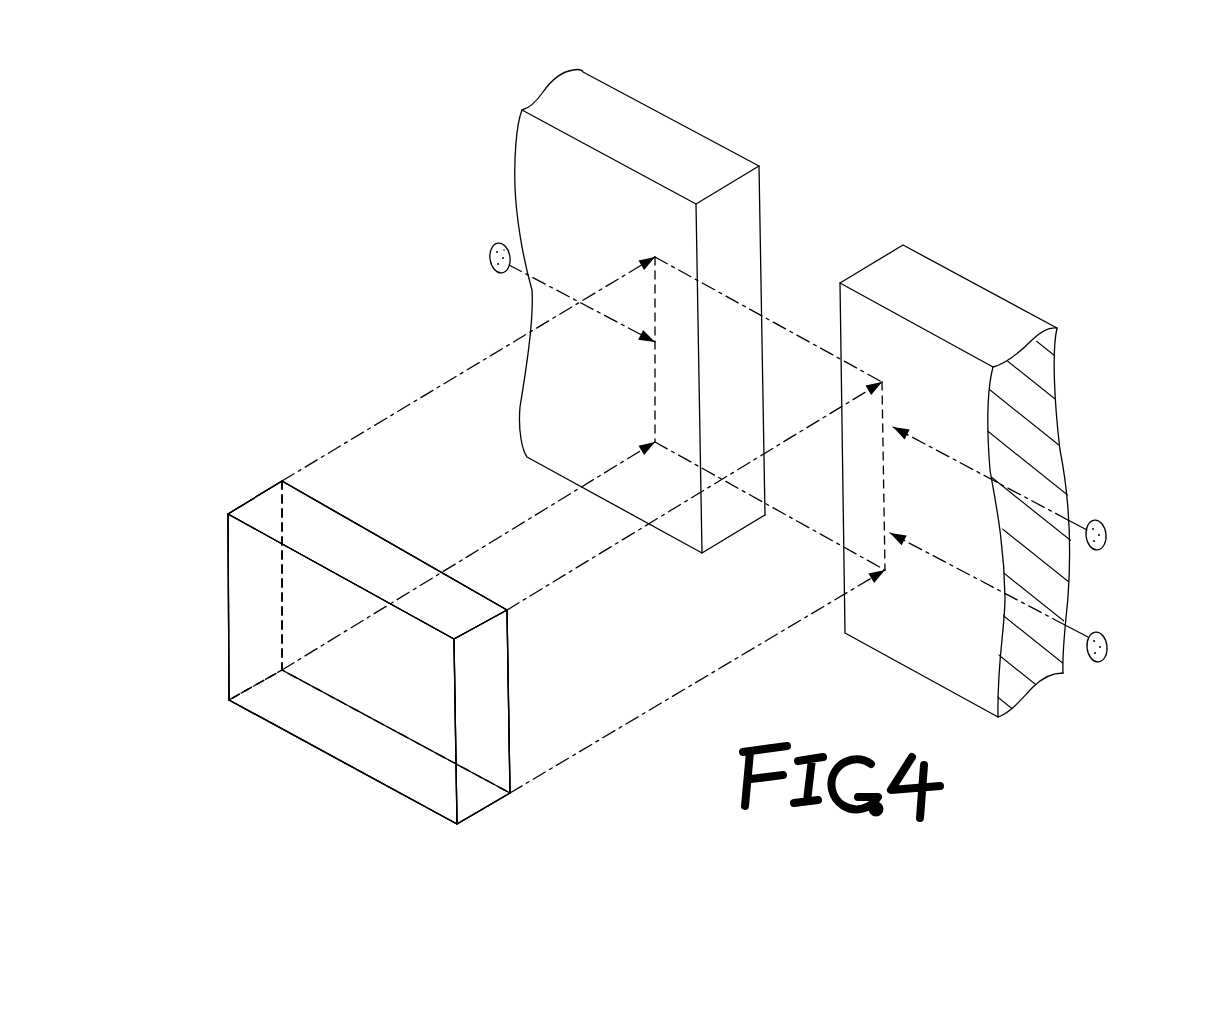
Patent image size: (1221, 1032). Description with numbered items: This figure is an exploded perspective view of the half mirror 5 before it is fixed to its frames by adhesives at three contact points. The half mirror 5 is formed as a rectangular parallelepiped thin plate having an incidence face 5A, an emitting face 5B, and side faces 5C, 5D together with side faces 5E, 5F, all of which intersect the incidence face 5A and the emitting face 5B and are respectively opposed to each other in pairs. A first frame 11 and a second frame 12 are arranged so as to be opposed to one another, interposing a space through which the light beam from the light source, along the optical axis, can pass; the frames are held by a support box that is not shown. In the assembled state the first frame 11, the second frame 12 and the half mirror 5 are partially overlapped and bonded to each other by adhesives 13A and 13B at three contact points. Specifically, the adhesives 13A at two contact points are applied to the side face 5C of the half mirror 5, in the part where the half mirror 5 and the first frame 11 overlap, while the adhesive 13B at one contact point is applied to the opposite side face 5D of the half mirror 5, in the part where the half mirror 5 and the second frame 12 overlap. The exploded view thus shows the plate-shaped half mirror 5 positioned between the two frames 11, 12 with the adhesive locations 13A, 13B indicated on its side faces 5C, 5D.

The half mirror 5 is at (348, 752).
The incidence face 5A is at (273, 703).
The emitting face 5B is at (417, 556).
The side face 5C is at (492, 707).
The side face 5D is at (257, 638).
The side face 5E is at (342, 540).
The side face 5F is at (442, 792).
The first frame 11 is at (967, 313).
The second frame 12 is at (605, 118).
The adhesives 13A is at (1107, 535).
The adhesive 13B is at (490, 259).